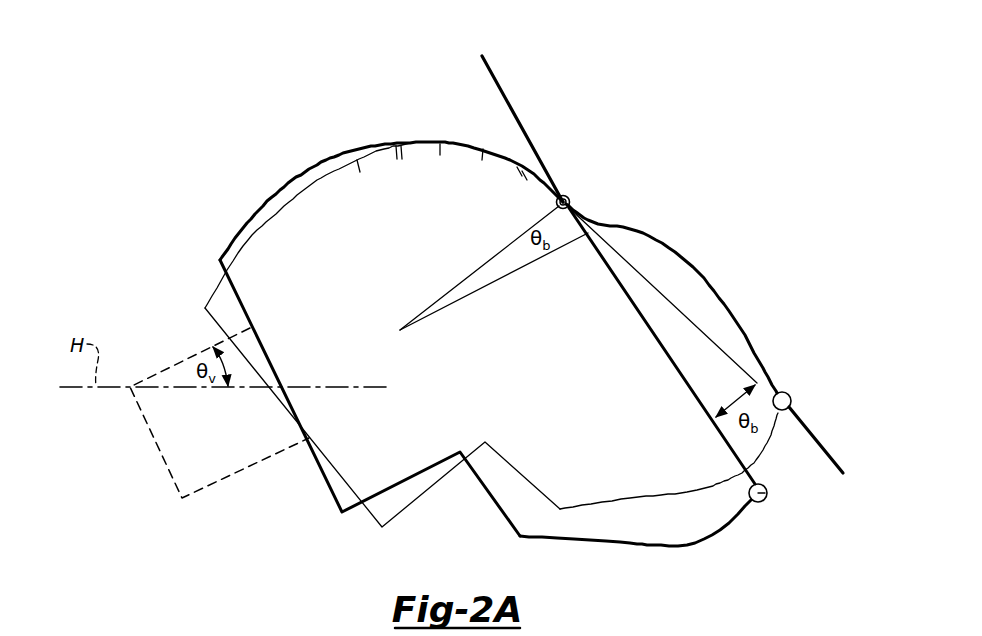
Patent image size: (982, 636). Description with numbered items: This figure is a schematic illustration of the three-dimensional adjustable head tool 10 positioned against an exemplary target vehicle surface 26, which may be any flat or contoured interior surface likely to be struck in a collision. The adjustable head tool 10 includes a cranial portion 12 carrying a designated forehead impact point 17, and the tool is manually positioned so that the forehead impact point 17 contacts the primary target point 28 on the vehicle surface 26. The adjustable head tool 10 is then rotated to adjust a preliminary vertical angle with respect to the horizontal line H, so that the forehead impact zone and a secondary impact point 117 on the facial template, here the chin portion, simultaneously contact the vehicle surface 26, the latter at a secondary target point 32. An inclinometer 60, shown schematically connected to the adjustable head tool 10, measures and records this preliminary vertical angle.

The adjustable head tool 10 is at (250, 192).
The cranial portion 12 is at (260, 264).
The forehead impact point 17 is at (571, 205).
The vehicle surface 26 is at (612, 92).
The primary target point 28 is at (576, 192).
The secondary target point 32 is at (791, 400).
The inclinometer 60 is at (175, 362).
The secondary impact point 117 is at (766, 497).